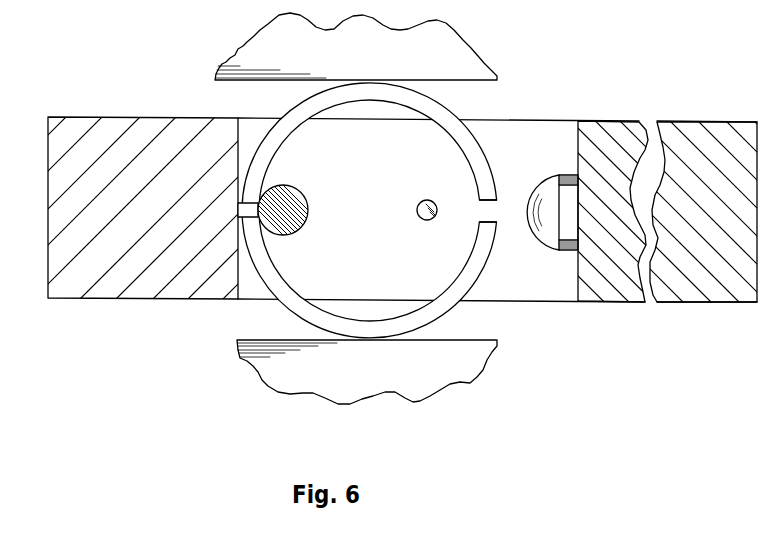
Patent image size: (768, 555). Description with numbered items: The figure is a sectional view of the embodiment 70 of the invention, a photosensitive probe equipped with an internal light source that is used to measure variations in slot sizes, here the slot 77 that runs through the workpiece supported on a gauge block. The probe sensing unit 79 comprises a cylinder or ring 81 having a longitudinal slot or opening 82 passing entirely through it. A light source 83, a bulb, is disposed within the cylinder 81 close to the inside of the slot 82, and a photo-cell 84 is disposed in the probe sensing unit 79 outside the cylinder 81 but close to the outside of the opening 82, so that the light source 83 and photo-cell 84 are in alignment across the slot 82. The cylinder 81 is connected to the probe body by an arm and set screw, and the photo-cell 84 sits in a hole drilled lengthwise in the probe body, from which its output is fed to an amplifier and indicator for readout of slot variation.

The embodiment 70 is at (152, 300).
The probe sensing unit 79 is at (210, 300).
The cylinder or ring 81 is at (287, 120).
The longitudinal slot or opening 82 is at (488, 212).
The light source 83 is at (427, 200).
The photo-cell 84 is at (552, 187).
The slot 77 is at (482, 320).